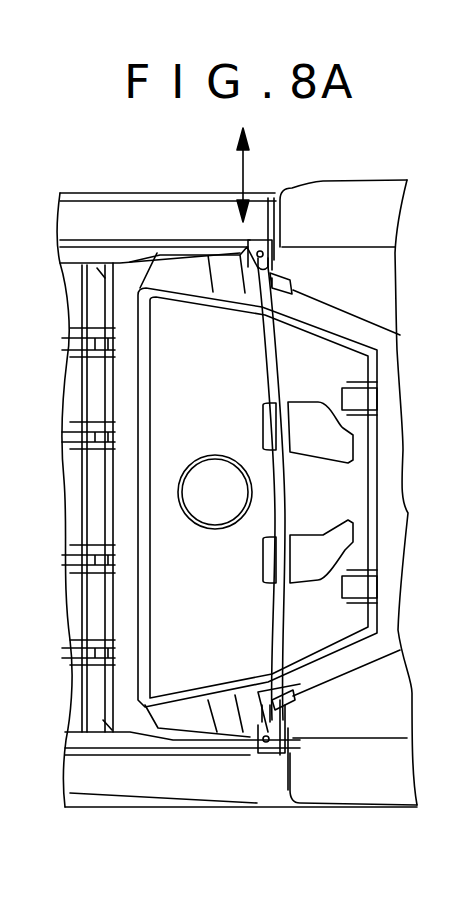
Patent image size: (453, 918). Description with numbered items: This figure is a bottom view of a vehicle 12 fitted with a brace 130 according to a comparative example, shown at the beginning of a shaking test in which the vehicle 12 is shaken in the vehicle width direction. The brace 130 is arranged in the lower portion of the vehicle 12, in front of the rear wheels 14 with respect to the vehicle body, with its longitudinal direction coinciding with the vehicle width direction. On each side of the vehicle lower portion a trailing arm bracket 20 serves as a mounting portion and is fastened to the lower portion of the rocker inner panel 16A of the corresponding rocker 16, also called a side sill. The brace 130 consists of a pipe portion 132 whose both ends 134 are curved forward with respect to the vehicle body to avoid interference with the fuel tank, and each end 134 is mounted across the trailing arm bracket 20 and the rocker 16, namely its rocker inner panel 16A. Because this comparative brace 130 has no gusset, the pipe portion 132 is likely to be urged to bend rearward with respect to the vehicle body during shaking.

The vehicle 12 is at (93, 193).
The rear wheels 14 is at (353, 208).
The rocker 16 is at (145, 222).
The rocker inner panel 16A is at (212, 240).
The trailing arm bracket 20 is at (297, 293).
The brace 130 is at (262, 384).
The pipe portion 132 is at (276, 617).
The ends 134 is at (265, 259).